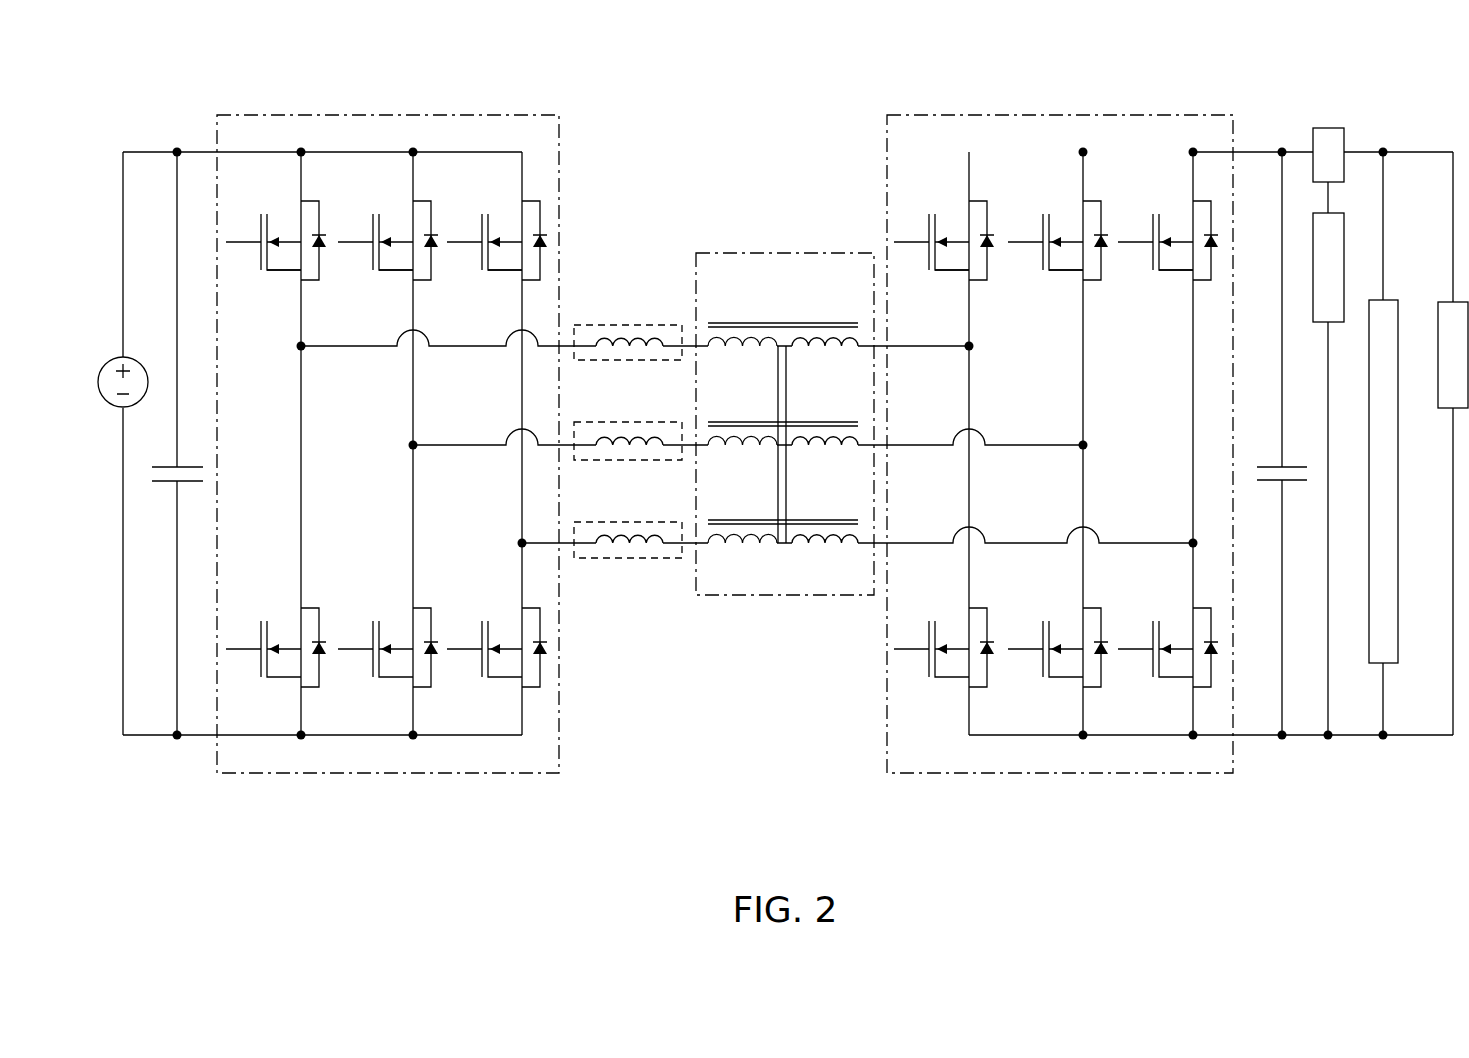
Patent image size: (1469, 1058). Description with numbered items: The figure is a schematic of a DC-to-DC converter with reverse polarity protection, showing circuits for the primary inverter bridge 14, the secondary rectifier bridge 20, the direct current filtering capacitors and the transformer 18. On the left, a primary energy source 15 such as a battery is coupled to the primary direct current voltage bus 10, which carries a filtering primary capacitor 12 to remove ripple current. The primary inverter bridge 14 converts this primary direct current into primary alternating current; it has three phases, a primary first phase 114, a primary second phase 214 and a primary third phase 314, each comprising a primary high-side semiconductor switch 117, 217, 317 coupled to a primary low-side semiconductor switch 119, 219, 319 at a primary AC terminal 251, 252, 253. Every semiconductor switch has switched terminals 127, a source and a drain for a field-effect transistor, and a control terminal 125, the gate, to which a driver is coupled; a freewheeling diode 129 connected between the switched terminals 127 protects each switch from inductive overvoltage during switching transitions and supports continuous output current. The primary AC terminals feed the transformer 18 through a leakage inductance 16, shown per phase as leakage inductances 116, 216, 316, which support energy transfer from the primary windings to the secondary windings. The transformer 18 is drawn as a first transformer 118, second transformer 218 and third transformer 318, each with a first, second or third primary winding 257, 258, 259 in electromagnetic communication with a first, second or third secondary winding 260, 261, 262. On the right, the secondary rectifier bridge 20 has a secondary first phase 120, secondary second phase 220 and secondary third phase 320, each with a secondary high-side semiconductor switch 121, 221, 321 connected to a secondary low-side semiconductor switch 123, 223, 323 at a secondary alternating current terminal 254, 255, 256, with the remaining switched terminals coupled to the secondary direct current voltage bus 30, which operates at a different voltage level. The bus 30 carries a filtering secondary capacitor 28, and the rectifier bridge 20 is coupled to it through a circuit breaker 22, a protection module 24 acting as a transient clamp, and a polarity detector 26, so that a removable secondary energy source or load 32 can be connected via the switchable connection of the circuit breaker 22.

The primary direct current voltage bus 10 is at (157, 152).
The filtering primary capacitor 12 is at (165, 481).
The primary inverter bridge 14 is at (427, 115).
The primary energy source 15 is at (128, 358).
The leakage inductance 16 is at (565, 425).
The transformer 18 is at (756, 355).
The secondary rectifier bridge 20 is at (1100, 115).
The circuit breaker 22 is at (1330, 128).
The protection module 24 is at (1328, 322).
The polarity detector 26 is at (1390, 300).
The filtering secondary capacitor 28 is at (1283, 466).
The secondary direct current voltage bus 30 is at (1282, 150).
The secondary energy source 32 is at (1452, 410).
The primary first phase 114 is at (281, 190).
The primary second phase 214 is at (391, 190).
The primary third phase 314 is at (501, 190).
The primary low-side semiconductor switch 119 is at (284, 618).
The primary low-side semiconductor switch 219 is at (396, 618).
The primary low-side semiconductor switch 319 is at (506, 618).
The secondary first phase 120 is at (961, 190).
The secondary second phase 220 is at (1075, 190).
The secondary third phase 320 is at (1185, 190).
The secondary low-side semiconductor switch 123 is at (952, 618).
The secondary low-side semiconductor switch 223 is at (1067, 618).
The secondary low-side semiconductor switch 323 is at (1177, 618).
The primary high-side semiconductor switch 117 is at (283, 277).
The primary high-side semiconductor switch 217 is at (395, 277).
The primary high-side semiconductor switch 317 is at (504, 277).
The secondary high-side semiconductor switch 121 is at (952, 277).
The secondary high-side semiconductor switch 221 is at (1067, 277).
The secondary high-side semiconductor switch 321 is at (1177, 277).
The control terminal 125 is at (232, 244).
The switched terminals 127 is at (305, 186).
The freewheeling diode 129 is at (320, 228).
The leakage inductance 116 is at (611, 325).
The leakage inductance 216 is at (574, 458).
The leakage inductance 316 is at (574, 527).
The first transformer 118 is at (738, 323).
The second transformer 218 is at (738, 422).
The third transformer 318 is at (738, 520).
The primary AC terminal 251 is at (303, 348).
The primary AC terminal 252 is at (411, 446).
The primary AC terminal 253 is at (520, 543).
The secondary alternating current terminal 254 is at (967, 348).
The secondary alternating current terminal 255 is at (1081, 444).
The secondary alternating current terminal 256 is at (1191, 542).
The first primary winding 257 is at (707, 336).
The second primary winding 258 is at (706, 432).
The third primary winding 259 is at (706, 530).
The first secondary winding 260 is at (848, 348).
The second secondary winding 261 is at (850, 447).
The third secondary winding 262 is at (850, 545).